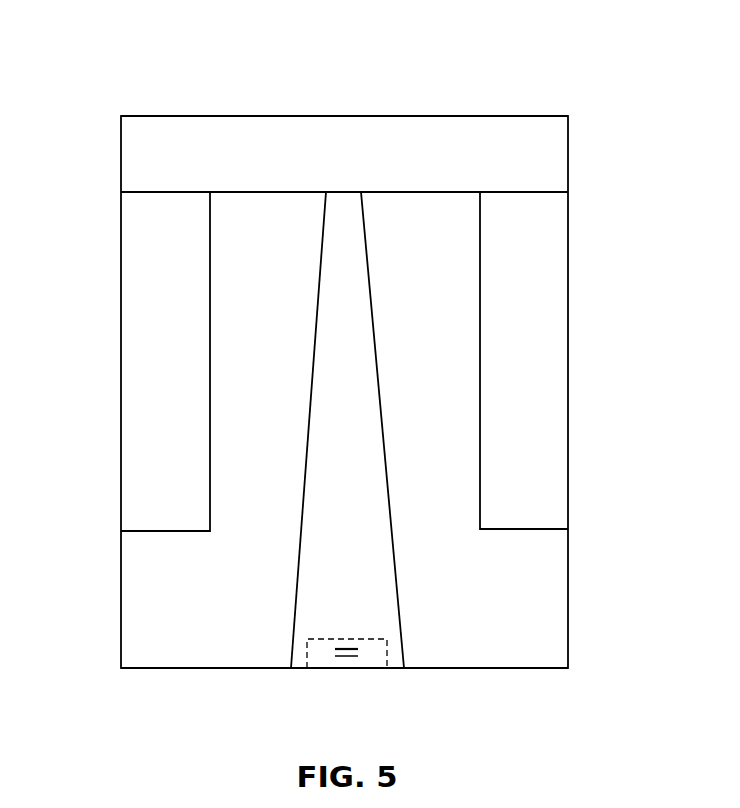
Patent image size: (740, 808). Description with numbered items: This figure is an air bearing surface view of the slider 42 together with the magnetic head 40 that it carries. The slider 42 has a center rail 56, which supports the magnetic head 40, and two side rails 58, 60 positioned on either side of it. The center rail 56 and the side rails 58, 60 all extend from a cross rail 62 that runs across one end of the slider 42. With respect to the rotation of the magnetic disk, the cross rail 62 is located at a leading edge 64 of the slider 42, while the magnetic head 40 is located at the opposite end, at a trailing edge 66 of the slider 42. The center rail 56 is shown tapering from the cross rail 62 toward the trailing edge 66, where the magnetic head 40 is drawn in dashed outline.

The magnetic head 40 is at (325, 660).
The slider 42 is at (114, 619).
The center rail 56 is at (328, 305).
The side rail 58 is at (138, 273).
The side rail 60 is at (552, 272).
The cross rail 62 is at (263, 128).
The leading edge 64 is at (445, 115).
The trailing edge 66 is at (468, 668).